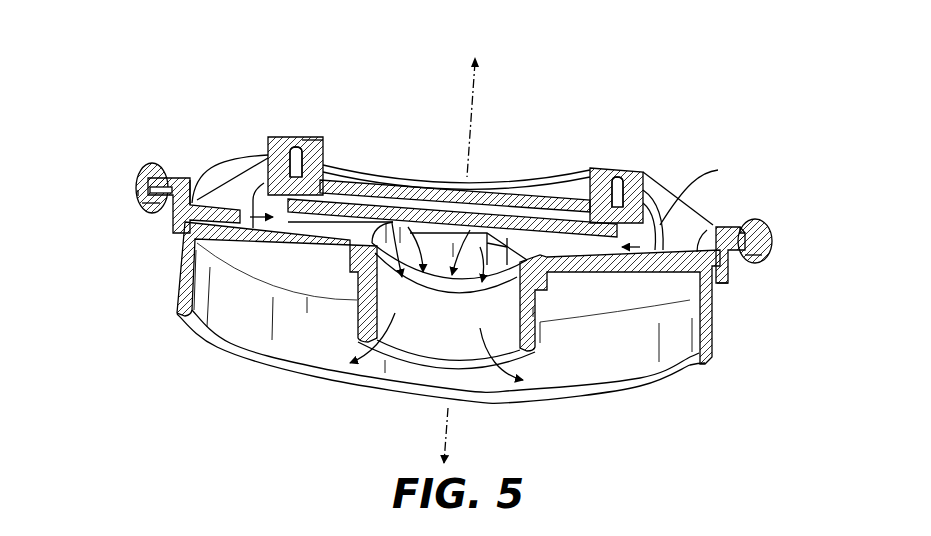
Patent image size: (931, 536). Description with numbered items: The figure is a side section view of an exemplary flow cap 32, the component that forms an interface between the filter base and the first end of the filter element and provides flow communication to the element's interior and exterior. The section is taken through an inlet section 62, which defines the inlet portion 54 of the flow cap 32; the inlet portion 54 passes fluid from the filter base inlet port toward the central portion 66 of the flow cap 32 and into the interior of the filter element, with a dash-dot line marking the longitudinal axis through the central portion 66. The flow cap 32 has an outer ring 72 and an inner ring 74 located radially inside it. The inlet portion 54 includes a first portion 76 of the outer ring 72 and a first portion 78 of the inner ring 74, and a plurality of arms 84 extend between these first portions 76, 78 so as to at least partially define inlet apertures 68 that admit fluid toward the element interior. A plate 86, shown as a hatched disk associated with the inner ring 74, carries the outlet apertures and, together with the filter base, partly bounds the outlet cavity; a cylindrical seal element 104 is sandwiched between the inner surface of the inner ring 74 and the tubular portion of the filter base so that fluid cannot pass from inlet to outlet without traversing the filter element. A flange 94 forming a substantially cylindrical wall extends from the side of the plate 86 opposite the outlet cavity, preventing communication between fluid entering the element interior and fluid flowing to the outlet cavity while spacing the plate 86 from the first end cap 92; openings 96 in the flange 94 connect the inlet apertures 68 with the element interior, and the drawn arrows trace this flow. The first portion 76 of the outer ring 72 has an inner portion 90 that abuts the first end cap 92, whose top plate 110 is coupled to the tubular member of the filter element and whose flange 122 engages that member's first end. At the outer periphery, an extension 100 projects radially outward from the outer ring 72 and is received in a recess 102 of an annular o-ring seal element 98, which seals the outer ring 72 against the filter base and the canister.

The flow cap 32 is at (687, 115).
The inlet portion 54 is at (222, 152).
The inlet section 62 is at (233, 127).
The central portion 66 is at (482, 168).
The inlet aperture 68 is at (250, 234).
The outer ring 72 is at (166, 217).
The inner ring 74 is at (300, 130).
The first portion of outer ring 76 is at (140, 165).
The first portion of inner ring 78 is at (272, 137).
The arms 84 is at (234, 200).
The plate 86 is at (347, 183).
The inner portion 90 is at (206, 205).
The first end cap 92 is at (178, 333).
The flange 94 is at (432, 242).
The openings 96 is at (343, 224).
The seal element 98 is at (152, 214).
The extension 100 is at (140, 192).
The recess 102 is at (150, 183).
The seal element 104 is at (318, 137).
The top plate 110 is at (280, 243).
The flange 122 is at (351, 312).